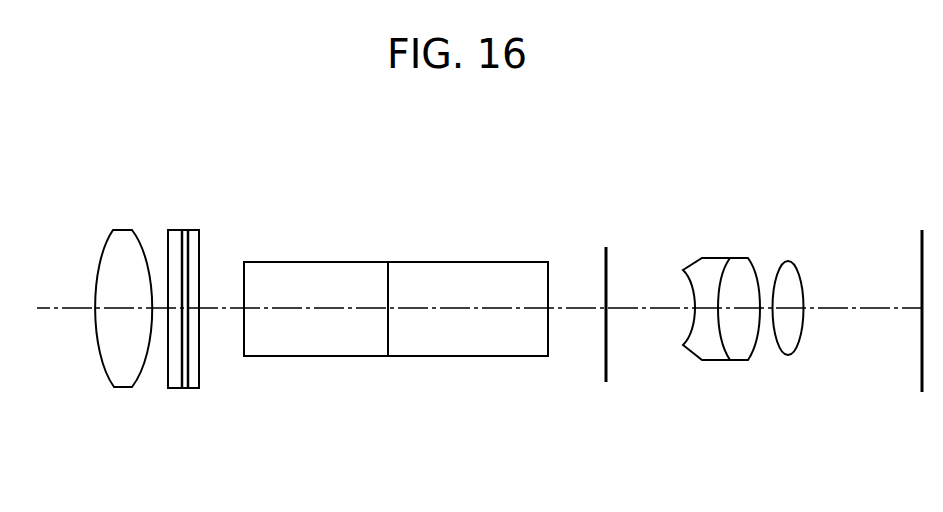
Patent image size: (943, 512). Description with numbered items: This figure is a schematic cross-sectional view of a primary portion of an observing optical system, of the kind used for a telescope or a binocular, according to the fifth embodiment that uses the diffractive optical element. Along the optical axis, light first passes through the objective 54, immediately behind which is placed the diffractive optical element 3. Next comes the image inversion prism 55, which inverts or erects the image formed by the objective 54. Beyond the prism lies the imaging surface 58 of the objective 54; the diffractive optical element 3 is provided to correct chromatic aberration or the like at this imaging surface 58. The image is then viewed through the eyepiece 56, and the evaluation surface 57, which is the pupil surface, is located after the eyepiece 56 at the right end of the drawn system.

The diffractive optical element 3 is at (180, 230).
The objective 54 is at (98, 422).
The image inversion prism 55 is at (361, 278).
The eyepiece 56 is at (807, 395).
The evaluation surface (pupil surface) 57 is at (921, 248).
The imaging surface 58 is at (603, 255).